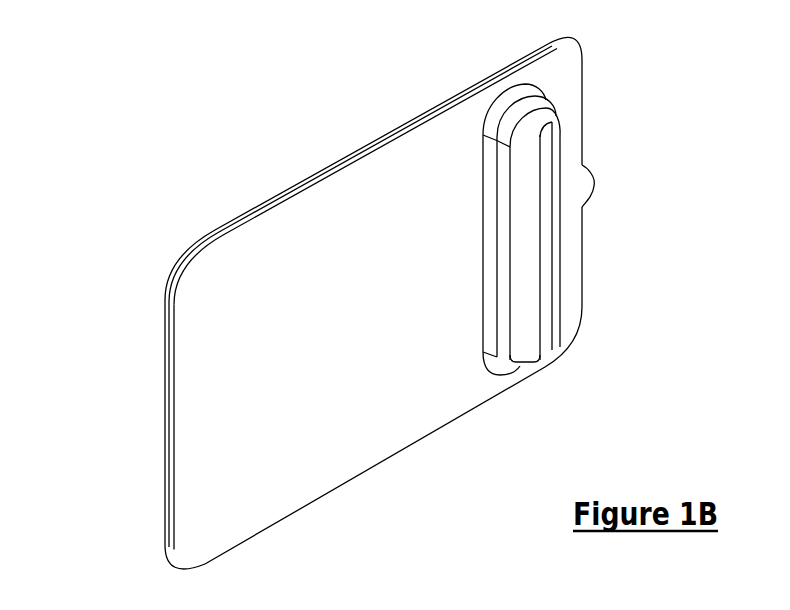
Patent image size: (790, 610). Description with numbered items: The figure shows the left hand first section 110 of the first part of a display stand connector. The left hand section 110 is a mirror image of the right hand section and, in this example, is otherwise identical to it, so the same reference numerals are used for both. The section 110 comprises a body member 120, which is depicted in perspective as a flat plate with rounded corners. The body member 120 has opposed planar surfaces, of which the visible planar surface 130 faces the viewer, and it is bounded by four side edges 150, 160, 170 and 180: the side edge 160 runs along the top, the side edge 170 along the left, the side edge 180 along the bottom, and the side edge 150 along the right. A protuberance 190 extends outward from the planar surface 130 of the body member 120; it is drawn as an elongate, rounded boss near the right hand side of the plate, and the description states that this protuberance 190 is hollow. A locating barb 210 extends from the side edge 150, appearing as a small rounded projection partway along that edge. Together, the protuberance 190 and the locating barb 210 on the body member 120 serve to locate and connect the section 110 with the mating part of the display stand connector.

The left hand first section 110 is at (382, 303).
The body member 120 is at (342, 322).
The planar surface 130 is at (258, 297).
The side edge 150 is at (582, 113).
The side edge 160 is at (317, 173).
The side edge 170 is at (165, 388).
The side edge 180 is at (393, 458).
The protuberance 190 is at (545, 321).
The locating barb 210 is at (594, 188).